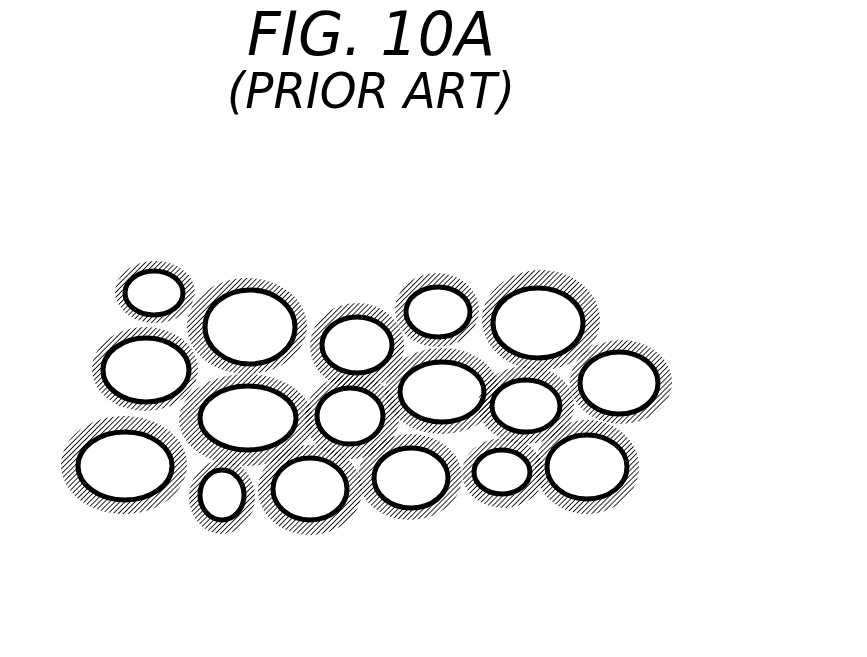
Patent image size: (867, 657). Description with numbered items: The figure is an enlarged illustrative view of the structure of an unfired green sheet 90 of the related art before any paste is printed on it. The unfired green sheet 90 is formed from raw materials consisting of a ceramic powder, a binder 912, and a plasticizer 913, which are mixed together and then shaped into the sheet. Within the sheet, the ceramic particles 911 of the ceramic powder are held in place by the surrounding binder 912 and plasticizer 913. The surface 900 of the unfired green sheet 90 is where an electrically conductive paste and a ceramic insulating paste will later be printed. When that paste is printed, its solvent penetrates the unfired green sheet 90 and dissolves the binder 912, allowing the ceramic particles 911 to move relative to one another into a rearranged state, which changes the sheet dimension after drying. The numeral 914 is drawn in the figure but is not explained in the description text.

The surface 900 is at (399, 383).
The unfired green sheet 90 is at (610, 377).
The ceramic particles 911 is at (592, 480).
The binder 912 is at (243, 278).
The plasticizer 913 is at (642, 422).
The void between particles 914 is at (196, 460).